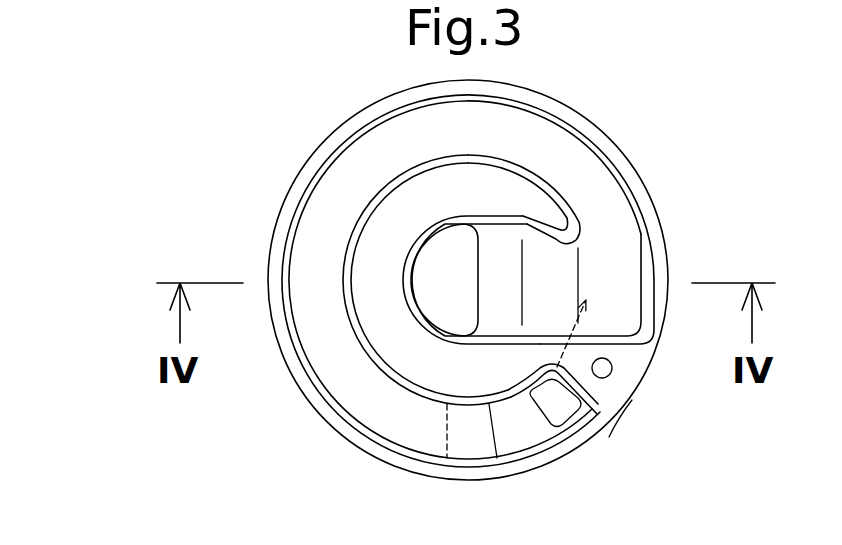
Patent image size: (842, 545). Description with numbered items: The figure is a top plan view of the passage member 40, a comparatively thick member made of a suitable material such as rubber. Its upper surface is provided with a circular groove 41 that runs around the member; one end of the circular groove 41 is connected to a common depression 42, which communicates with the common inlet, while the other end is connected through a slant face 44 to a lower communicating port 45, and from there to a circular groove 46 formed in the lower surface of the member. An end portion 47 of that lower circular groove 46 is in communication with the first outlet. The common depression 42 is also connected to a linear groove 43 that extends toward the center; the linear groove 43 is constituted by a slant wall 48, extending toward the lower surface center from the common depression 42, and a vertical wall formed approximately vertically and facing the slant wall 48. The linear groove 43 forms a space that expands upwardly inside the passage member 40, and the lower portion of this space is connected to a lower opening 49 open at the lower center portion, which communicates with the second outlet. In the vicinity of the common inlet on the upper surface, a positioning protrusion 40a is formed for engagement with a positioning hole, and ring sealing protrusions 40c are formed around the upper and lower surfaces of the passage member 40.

The passage member 40 is at (291, 132).
The positioning protrusion 40a is at (612, 370).
The ring sealing protrusions 40c is at (617, 162).
The circular groove 41 is at (322, 206).
The common depression 42 is at (621, 238).
The linear groove 43 is at (556, 293).
The slant face 44 is at (530, 424).
The lower communicating port 45 is at (558, 407).
The circular groove 46 is at (611, 362).
The end portion 47 is at (447, 433).
The slant wall 48 is at (495, 276).
The lower opening 49 is at (441, 301).